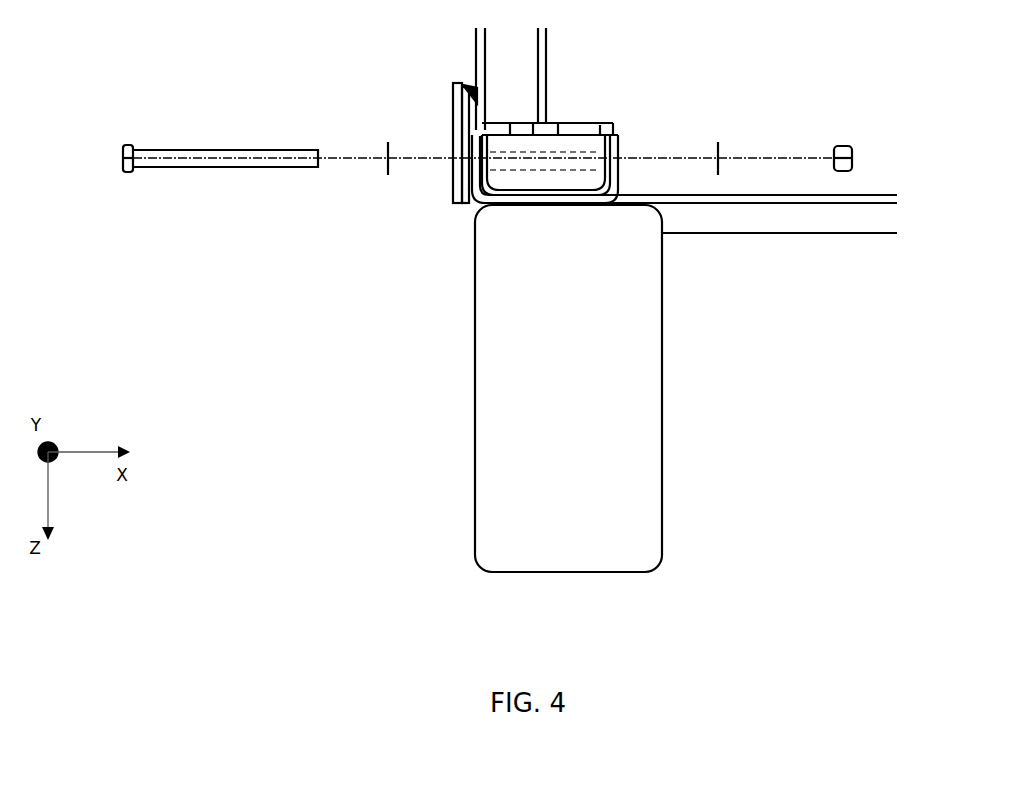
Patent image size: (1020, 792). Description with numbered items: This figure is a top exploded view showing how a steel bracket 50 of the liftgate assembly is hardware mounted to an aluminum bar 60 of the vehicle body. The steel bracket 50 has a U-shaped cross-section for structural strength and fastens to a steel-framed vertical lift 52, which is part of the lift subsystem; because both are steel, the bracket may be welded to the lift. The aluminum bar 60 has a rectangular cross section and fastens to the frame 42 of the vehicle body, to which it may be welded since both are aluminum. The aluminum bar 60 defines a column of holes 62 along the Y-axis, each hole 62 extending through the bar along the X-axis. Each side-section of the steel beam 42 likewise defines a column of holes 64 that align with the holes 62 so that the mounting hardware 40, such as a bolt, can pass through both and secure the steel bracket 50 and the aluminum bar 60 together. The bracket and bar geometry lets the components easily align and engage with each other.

The mounting hardware 40 is at (310, 112).
The frame 42 is at (497, 53).
The steel bracket 50 is at (618, 178).
The steel-framed vertical lift 52 is at (554, 400).
The aluminum bar 60 is at (468, 205).
The hole 62 is at (631, 142).
The hole 64 is at (550, 163).